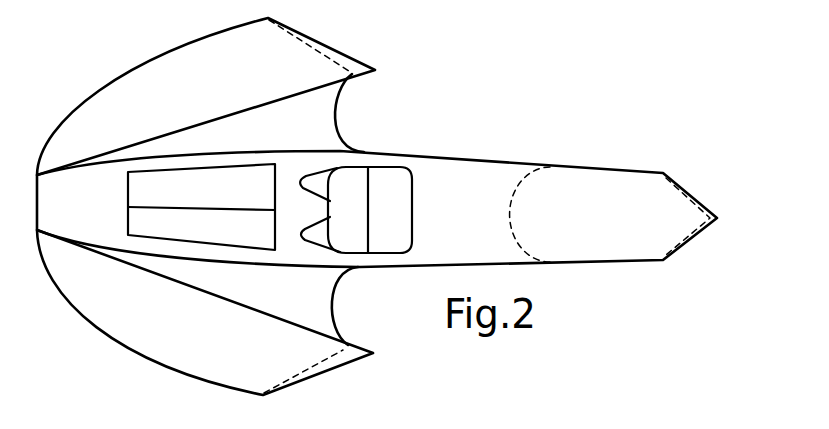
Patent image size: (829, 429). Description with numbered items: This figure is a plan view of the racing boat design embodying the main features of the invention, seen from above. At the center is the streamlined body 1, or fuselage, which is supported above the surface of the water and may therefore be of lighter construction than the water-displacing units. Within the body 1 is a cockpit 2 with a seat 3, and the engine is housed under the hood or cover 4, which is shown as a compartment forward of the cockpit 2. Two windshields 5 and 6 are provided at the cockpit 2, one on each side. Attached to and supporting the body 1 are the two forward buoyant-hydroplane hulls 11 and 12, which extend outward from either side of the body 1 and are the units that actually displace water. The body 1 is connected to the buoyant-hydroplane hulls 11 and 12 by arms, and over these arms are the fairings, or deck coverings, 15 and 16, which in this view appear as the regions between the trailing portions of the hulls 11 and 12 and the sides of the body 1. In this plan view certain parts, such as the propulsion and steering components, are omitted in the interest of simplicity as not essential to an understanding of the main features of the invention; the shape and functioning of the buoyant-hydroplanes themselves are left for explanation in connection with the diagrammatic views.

The streamlined body 1 is at (468, 167).
The cockpit 2 is at (348, 210).
The seat 3 is at (390, 210).
The hood 4 is at (201, 207).
The windshield 5 is at (318, 184).
The windshield 6 is at (320, 234).
The forward buoyant-hydroplane hull 11 is at (206, 96).
The forward buoyant-hydroplane hull 12 is at (205, 312).
The fairing 15 is at (320, 113).
The fairing 16 is at (320, 306).